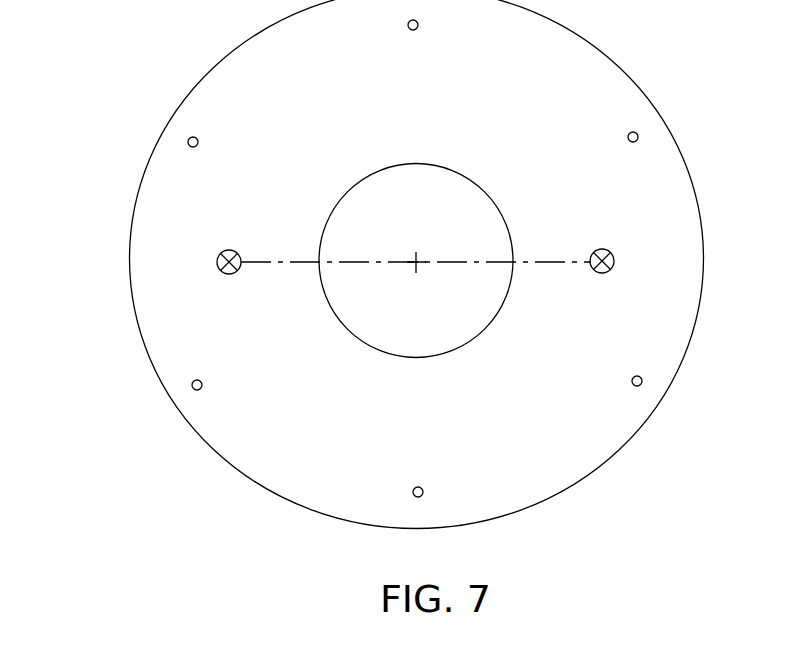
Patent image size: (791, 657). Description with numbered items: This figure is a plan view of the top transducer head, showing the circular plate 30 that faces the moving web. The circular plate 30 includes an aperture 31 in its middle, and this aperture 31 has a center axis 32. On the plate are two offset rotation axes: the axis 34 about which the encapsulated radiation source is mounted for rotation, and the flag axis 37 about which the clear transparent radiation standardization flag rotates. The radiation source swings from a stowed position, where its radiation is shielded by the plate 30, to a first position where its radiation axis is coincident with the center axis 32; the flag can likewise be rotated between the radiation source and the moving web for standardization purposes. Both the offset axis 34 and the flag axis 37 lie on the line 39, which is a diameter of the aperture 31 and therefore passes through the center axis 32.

The circular plate 30 is at (136, 313).
The aperture 31 is at (358, 182).
The center axis 32 is at (419, 265).
The axis of rotation of the encapsulated radiation source 34 is at (224, 274).
The flag axis 37 is at (608, 272).
The line 39 is at (305, 262).